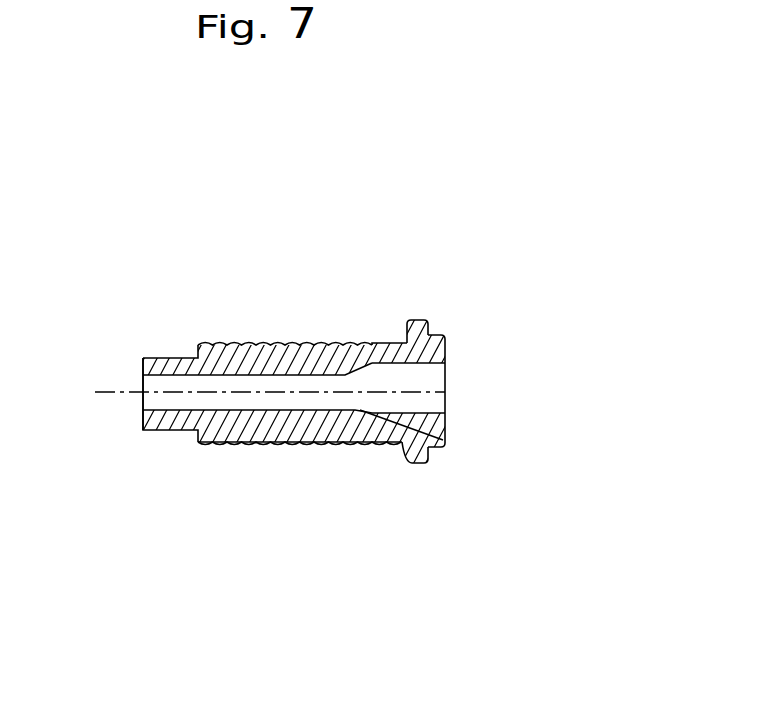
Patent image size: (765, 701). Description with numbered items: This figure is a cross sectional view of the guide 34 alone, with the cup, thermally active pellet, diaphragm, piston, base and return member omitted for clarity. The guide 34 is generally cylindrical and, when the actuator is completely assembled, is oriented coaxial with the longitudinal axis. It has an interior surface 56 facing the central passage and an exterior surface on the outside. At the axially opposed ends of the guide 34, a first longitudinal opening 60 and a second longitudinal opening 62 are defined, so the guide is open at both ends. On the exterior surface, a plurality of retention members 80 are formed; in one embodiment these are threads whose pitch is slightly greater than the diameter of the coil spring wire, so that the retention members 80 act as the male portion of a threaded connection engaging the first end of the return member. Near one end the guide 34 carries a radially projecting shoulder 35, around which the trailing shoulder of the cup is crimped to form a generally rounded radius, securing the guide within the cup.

The guide 34 is at (273, 525).
The retention members 80 is at (243, 343).
The interior surface 56 is at (331, 372).
The first longitudinal opening 60 is at (450, 396).
The second longitudinal opening 62 is at (130, 379).
The radially projecting shoulder 35 is at (418, 463).